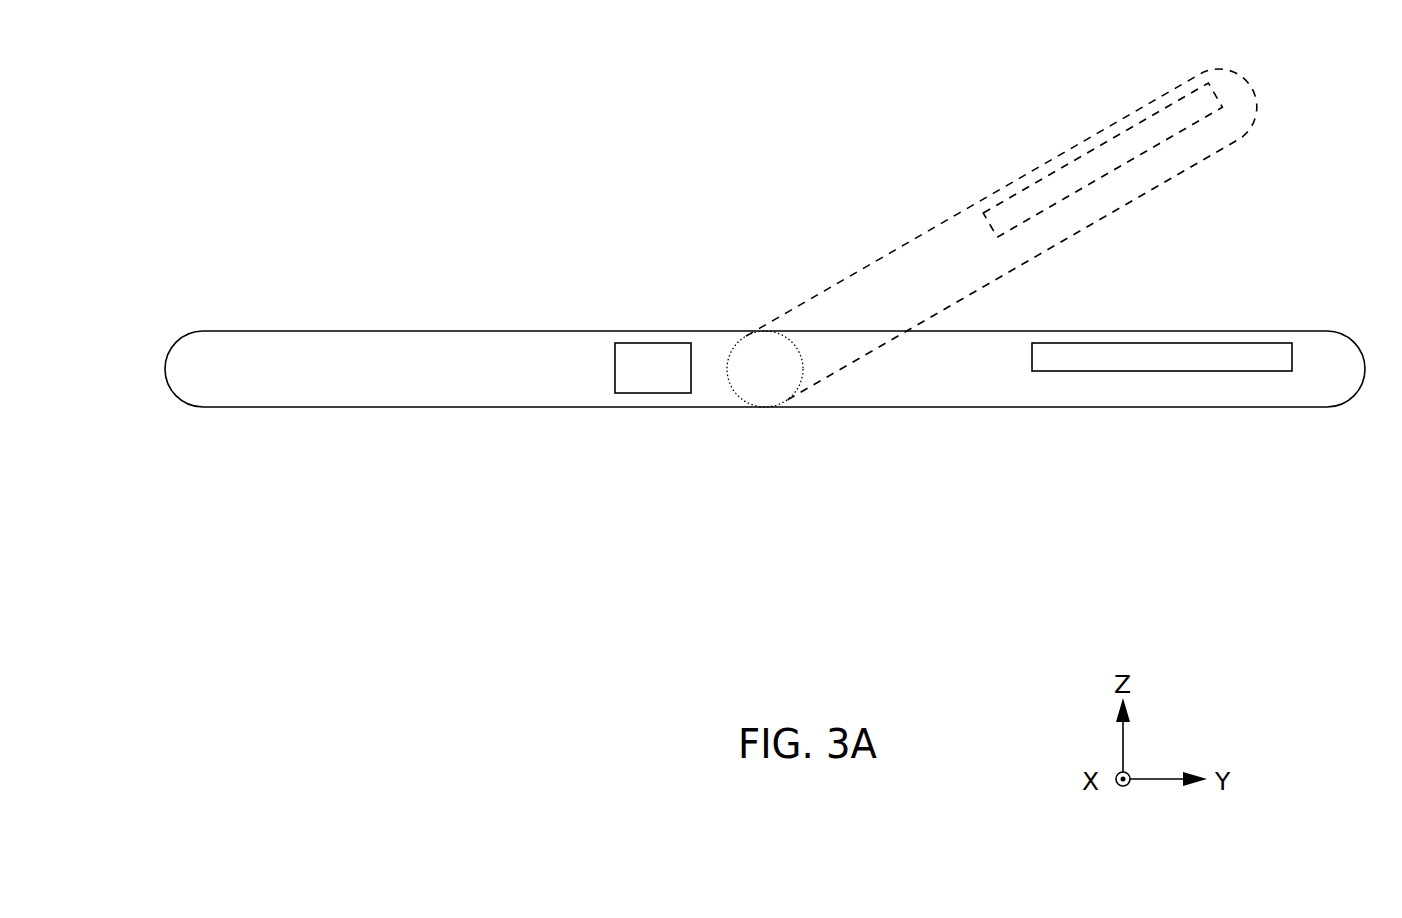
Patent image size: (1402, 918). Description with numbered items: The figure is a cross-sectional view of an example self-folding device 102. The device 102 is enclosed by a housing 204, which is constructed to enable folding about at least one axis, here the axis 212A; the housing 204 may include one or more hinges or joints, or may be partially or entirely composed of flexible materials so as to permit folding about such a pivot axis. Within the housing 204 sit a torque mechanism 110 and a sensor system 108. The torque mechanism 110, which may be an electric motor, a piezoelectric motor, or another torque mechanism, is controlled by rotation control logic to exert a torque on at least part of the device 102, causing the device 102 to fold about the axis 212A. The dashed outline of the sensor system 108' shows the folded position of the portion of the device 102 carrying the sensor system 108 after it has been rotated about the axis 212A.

The self-folding device 102 is at (400, 289).
The housing 204 is at (173, 340).
The axis 212A is at (765, 370).
The torque mechanism 110 is at (652, 368).
The sensor system 108 is at (1153, 402).
The display / panel in rotated position 108' is at (1008, 228).